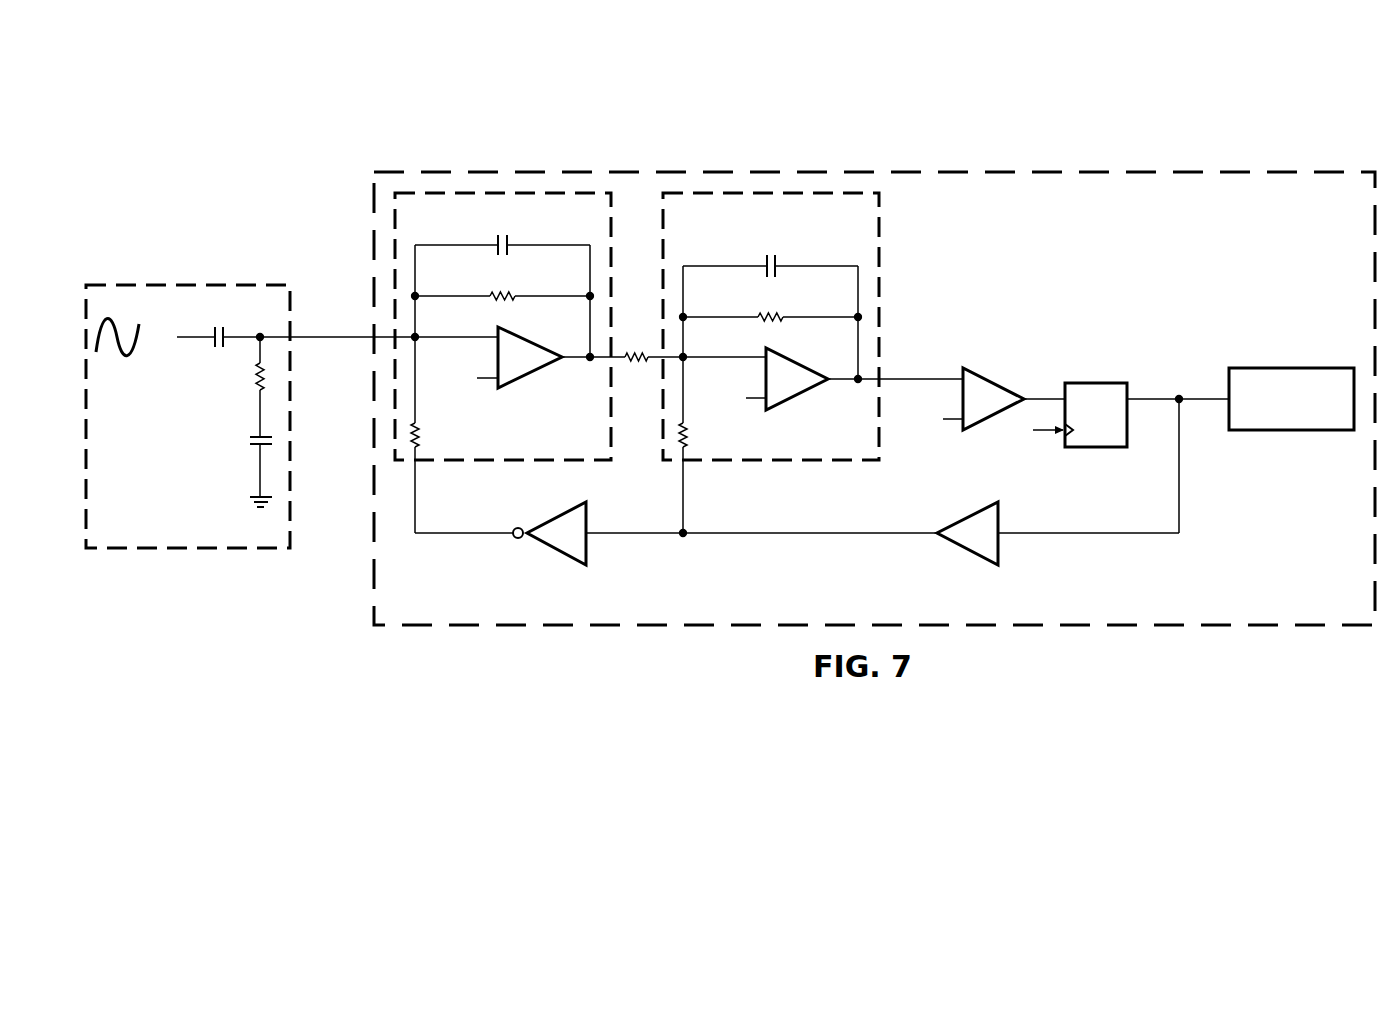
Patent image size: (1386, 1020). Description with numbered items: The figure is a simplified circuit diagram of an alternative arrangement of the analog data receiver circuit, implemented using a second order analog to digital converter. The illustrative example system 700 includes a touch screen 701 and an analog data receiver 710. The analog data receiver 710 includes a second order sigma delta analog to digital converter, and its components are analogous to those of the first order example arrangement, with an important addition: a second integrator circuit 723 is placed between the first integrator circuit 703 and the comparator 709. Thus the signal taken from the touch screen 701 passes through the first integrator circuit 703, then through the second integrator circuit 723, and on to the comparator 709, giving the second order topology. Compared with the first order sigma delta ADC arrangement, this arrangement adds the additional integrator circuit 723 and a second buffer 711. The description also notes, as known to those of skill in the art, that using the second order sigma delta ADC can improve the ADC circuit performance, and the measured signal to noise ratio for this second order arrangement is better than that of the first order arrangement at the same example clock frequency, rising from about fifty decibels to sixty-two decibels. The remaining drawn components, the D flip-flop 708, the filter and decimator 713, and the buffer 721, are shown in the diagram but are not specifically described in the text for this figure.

The system 700 is at (318, 104).
The touch screen 701 is at (162, 284).
The first integrator circuit 703 is at (478, 463).
The D flip-flop 708 is at (1097, 383).
The comparator 709 is at (993, 381).
The analog data receiver 710 is at (1023, 168).
The second buffer 711 is at (555, 550).
The filter and decimator 713 is at (1292, 367).
The buffer 721 is at (965, 552).
The second integrator circuit 723 is at (747, 463).